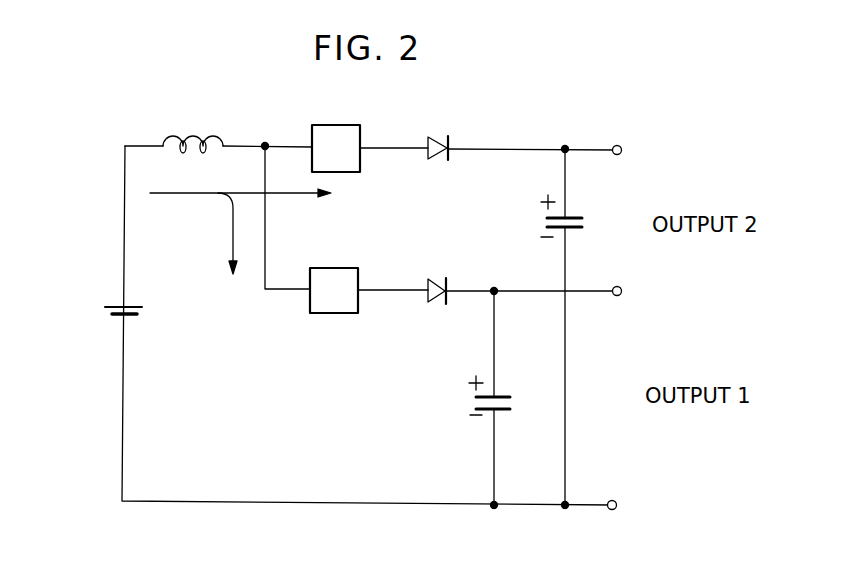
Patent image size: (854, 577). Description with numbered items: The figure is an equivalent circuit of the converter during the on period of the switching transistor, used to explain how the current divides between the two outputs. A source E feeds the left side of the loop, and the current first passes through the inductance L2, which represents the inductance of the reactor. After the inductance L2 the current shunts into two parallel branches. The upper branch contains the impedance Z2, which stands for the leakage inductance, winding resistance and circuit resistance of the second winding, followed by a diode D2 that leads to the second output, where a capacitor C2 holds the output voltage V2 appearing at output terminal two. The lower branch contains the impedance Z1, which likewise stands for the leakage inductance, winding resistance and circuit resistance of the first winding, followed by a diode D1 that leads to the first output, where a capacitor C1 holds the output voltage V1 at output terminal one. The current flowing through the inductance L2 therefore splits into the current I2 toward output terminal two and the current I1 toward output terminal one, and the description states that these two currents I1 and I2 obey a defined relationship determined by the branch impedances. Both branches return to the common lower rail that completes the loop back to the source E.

The inductance of the reactor L2 is at (207, 133).
The impedance of the second winding Z2 is at (336, 148).
The impedance of the first winding Z1 is at (334, 290).
The diode (second) D2 is at (437, 139).
The diode (first) D1 is at (432, 280).
The capacitor (second output) C2 is at (583, 224).
The capacitor (first output) C1 is at (511, 401).
The output voltage 2 V2 is at (530, 219).
The output voltage 1 V1 is at (459, 399).
The DC source / battery E is at (108, 309).
The current to output terminal two I2 is at (257, 196).
The current to output terminal one I1 is at (233, 251).